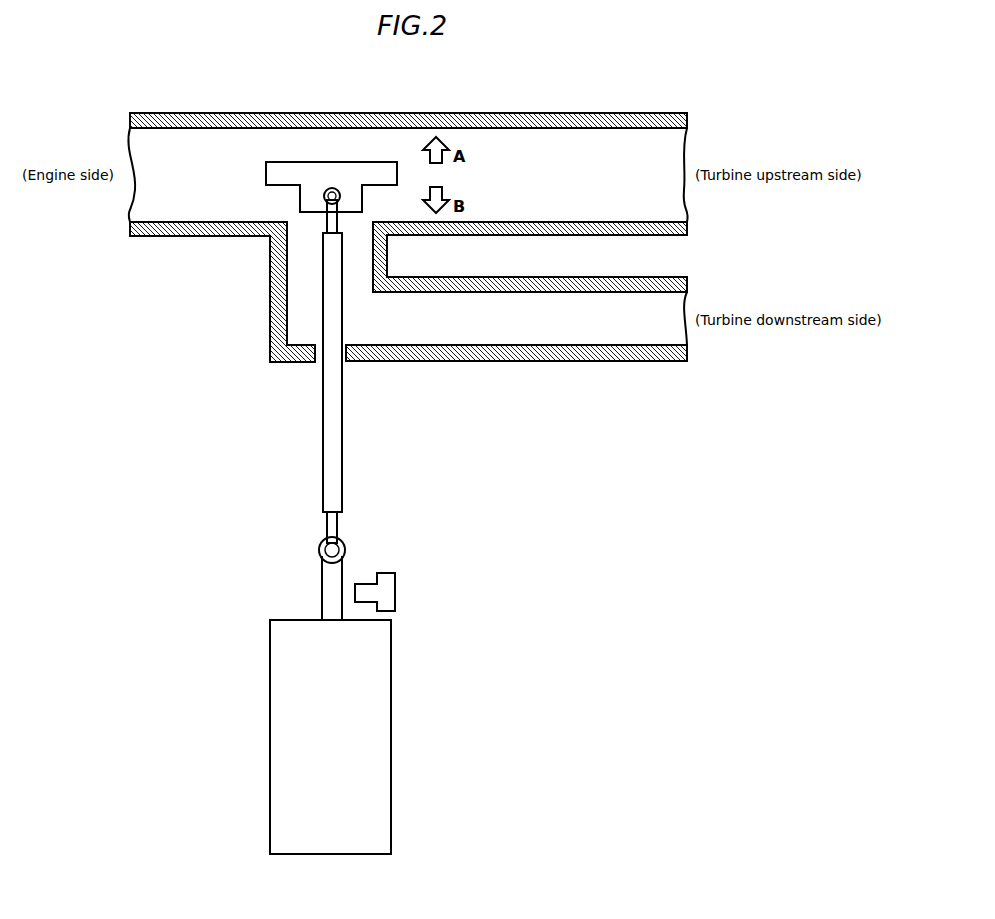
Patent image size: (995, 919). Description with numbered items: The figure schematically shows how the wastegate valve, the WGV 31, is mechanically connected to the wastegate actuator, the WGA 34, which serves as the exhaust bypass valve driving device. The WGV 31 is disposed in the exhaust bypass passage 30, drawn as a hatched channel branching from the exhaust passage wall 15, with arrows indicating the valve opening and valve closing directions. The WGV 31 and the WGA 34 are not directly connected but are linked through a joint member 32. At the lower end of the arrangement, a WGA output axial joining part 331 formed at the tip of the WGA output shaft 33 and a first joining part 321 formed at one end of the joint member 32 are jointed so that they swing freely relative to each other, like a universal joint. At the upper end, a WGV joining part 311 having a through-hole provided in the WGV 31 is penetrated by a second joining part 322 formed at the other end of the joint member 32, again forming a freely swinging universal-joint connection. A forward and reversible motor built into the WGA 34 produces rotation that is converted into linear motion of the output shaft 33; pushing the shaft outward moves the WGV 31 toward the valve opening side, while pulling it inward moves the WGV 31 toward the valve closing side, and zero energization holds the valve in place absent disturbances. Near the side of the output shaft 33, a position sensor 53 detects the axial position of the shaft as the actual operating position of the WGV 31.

The exhaust passage wall 15 is at (540, 113).
The exhaust bypass passage 30 is at (537, 361).
The WGV 31 is at (265, 178).
The WGV joining part 311 is at (322, 200).
The second joining part 322 is at (330, 222).
The joint member 32 is at (330, 426).
The first joining part 321 is at (330, 525).
The WGA output axial joining part 331 is at (348, 546).
The output shaft 33 is at (327, 596).
The position sensor 53 is at (396, 590).
The WGA 34 is at (280, 706).